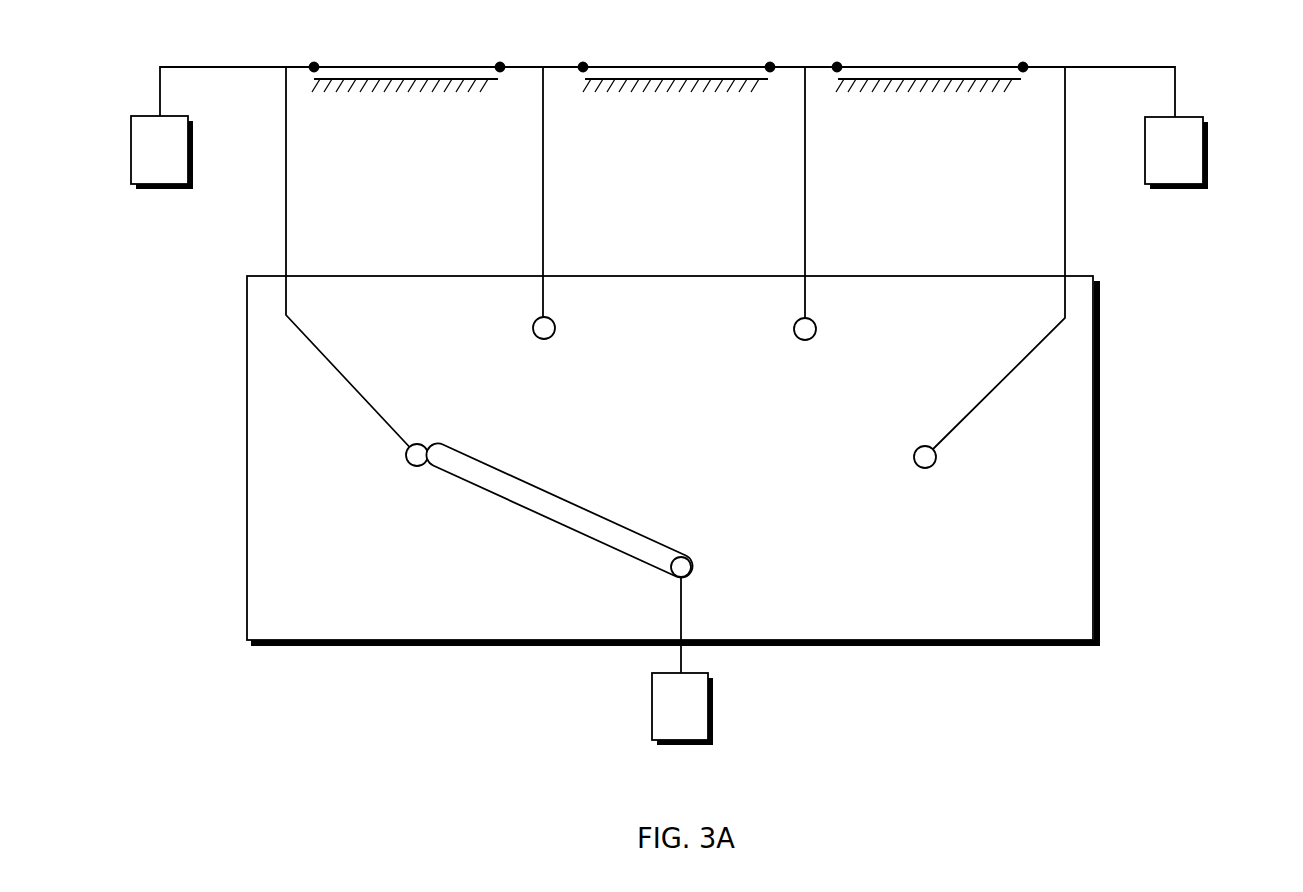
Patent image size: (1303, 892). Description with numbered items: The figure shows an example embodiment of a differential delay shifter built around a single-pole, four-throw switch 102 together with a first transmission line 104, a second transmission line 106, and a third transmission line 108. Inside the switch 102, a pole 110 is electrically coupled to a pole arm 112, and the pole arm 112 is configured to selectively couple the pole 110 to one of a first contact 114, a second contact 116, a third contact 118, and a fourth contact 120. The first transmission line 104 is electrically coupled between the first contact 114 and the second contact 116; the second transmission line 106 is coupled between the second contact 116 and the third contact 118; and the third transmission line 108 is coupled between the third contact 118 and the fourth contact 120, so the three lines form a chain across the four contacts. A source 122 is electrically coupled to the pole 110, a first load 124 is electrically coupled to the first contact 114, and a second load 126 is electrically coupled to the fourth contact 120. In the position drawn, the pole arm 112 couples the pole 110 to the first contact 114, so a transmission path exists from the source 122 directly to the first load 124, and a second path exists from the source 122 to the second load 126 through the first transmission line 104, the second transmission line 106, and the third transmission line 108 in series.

The single-pole, four-throw switch 102 is at (246, 588).
The first transmission line 104 is at (360, 79).
The second transmission line 106 is at (624, 79).
The third transmission line 108 is at (882, 79).
The pole 110 is at (692, 569).
The pole arm 112 is at (530, 511).
The first contact 114 is at (415, 466).
The second contact 116 is at (545, 340).
The third contact 118 is at (805, 341).
The fourth contact 120 is at (926, 468).
The source 122 is at (650, 710).
The first load 124 is at (130, 153).
The second load 126 is at (1207, 155).